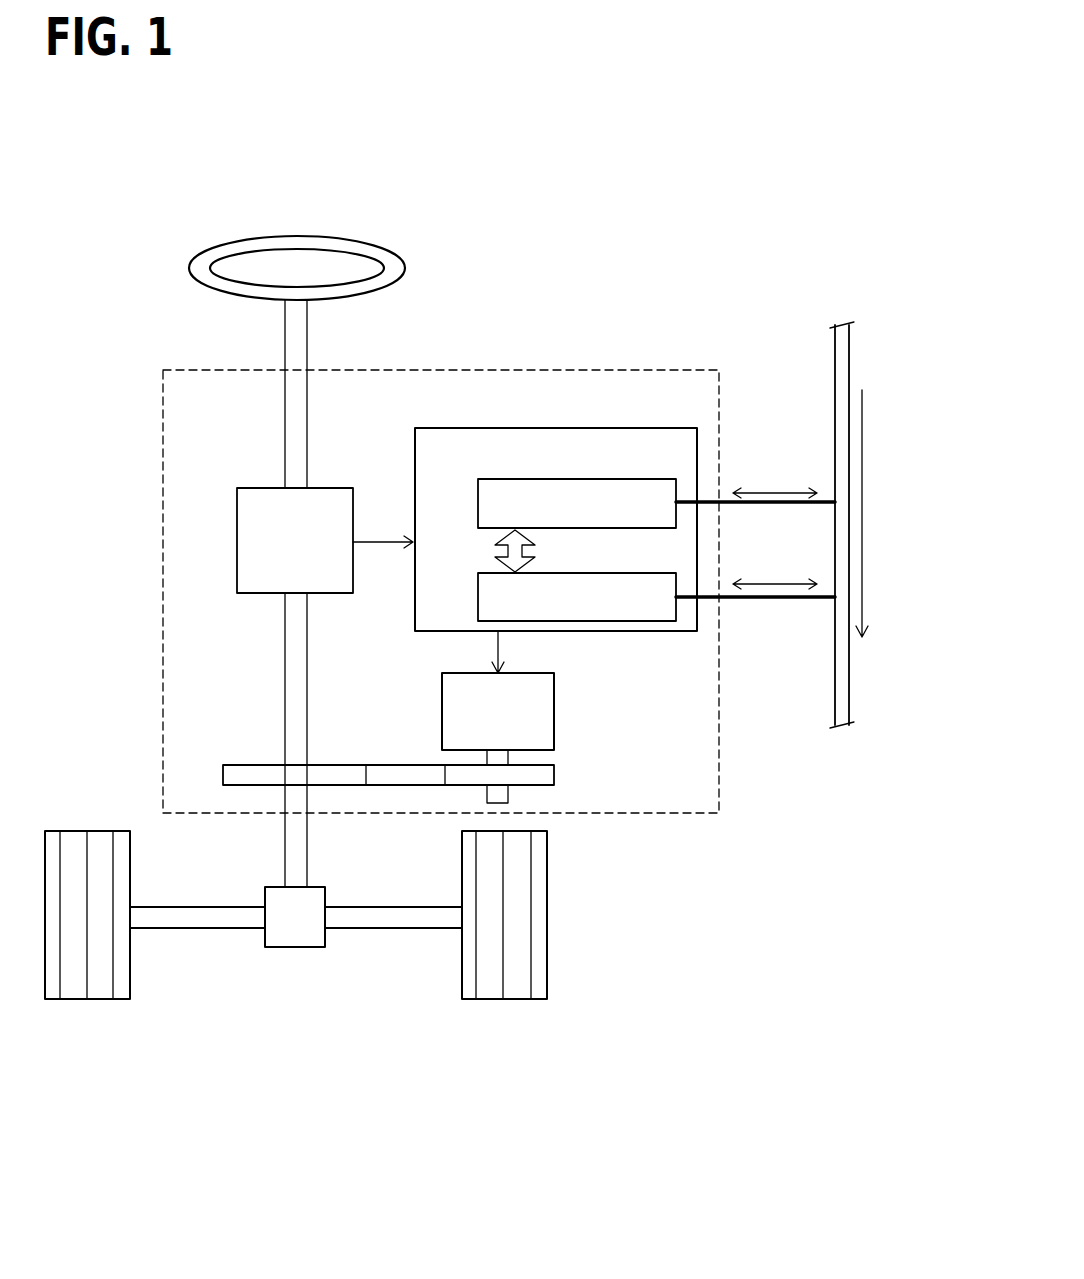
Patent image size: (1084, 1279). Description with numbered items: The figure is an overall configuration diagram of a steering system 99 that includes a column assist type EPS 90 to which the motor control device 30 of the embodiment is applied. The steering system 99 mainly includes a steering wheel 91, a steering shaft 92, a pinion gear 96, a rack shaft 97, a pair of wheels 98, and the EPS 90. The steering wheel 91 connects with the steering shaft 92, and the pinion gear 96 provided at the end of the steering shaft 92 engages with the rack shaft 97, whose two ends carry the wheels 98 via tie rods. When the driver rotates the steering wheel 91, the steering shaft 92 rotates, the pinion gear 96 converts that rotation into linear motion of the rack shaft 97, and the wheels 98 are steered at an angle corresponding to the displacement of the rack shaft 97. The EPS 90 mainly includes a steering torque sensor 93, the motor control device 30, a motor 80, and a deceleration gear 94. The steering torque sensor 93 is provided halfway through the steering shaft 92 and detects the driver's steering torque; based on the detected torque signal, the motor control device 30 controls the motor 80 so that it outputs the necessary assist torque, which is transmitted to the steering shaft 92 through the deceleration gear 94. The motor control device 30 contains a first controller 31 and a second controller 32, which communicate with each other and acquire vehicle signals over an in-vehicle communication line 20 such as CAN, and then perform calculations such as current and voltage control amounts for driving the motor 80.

The in-vehicle communication line 20 is at (849, 668).
The motor control device 30 is at (556, 429).
The first controller 31 is at (478, 504).
The second controller 32 is at (478, 598).
The motor 80 is at (554, 708).
The EPS 90 is at (437, 370).
The steering wheel 91 is at (190, 268).
The steering shaft 92 is at (285, 349).
The steering torque sensor 93 is at (237, 544).
The deceleration gear 94 is at (542, 777).
The pinion gear 96 is at (287, 947).
The rack shaft 97 is at (192, 928).
The wheel 98 is at (103, 999).
The steering system 99 is at (296, 988).